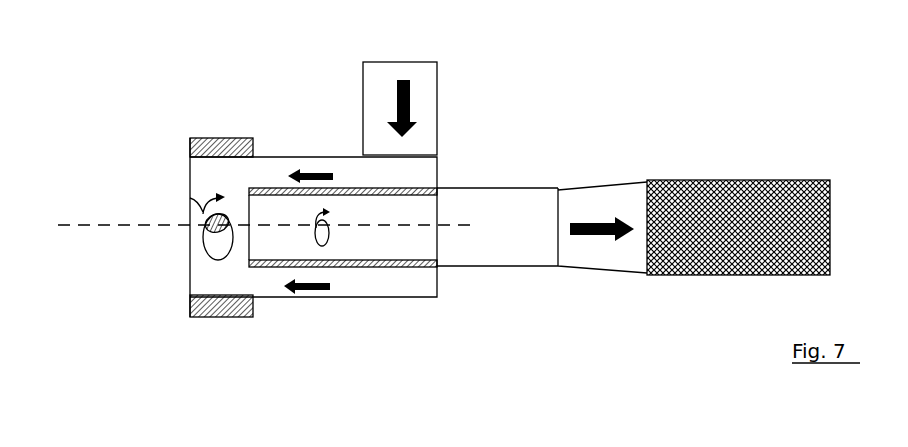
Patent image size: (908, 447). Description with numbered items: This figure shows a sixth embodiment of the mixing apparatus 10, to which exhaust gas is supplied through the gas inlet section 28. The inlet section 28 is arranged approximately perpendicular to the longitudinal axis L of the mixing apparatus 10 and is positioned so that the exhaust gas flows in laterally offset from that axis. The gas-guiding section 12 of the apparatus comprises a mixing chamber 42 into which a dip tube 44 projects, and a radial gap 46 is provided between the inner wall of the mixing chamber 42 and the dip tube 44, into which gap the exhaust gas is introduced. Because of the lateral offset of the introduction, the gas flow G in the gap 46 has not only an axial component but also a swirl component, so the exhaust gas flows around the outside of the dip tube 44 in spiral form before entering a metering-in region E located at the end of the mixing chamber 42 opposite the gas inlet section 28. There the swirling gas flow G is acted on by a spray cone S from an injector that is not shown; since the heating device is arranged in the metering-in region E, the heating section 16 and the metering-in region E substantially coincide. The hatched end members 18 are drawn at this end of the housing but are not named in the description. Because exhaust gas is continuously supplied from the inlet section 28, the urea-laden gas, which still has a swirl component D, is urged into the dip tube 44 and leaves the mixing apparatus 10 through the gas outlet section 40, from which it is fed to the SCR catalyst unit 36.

The mixing apparatus 10 is at (298, 126).
The gas-guiding section 12 is at (412, 314).
The heating section 16 is at (190, 122).
The bearing element 18 is at (223, 137).
The gas inlet section 28 is at (440, 103).
The SCR catalyst unit 36 is at (727, 180).
The gas outlet section 40 is at (535, 188).
The mixing chamber 42 is at (338, 298).
The dip tube 44 is at (426, 185).
The radial gap 46 is at (423, 283).
The longitudinal axis L is at (73, 223).
The spray cone S is at (190, 198).
The gas flow G is at (318, 168).
The swirl component D is at (207, 247).
The metering-in region E is at (214, 345).